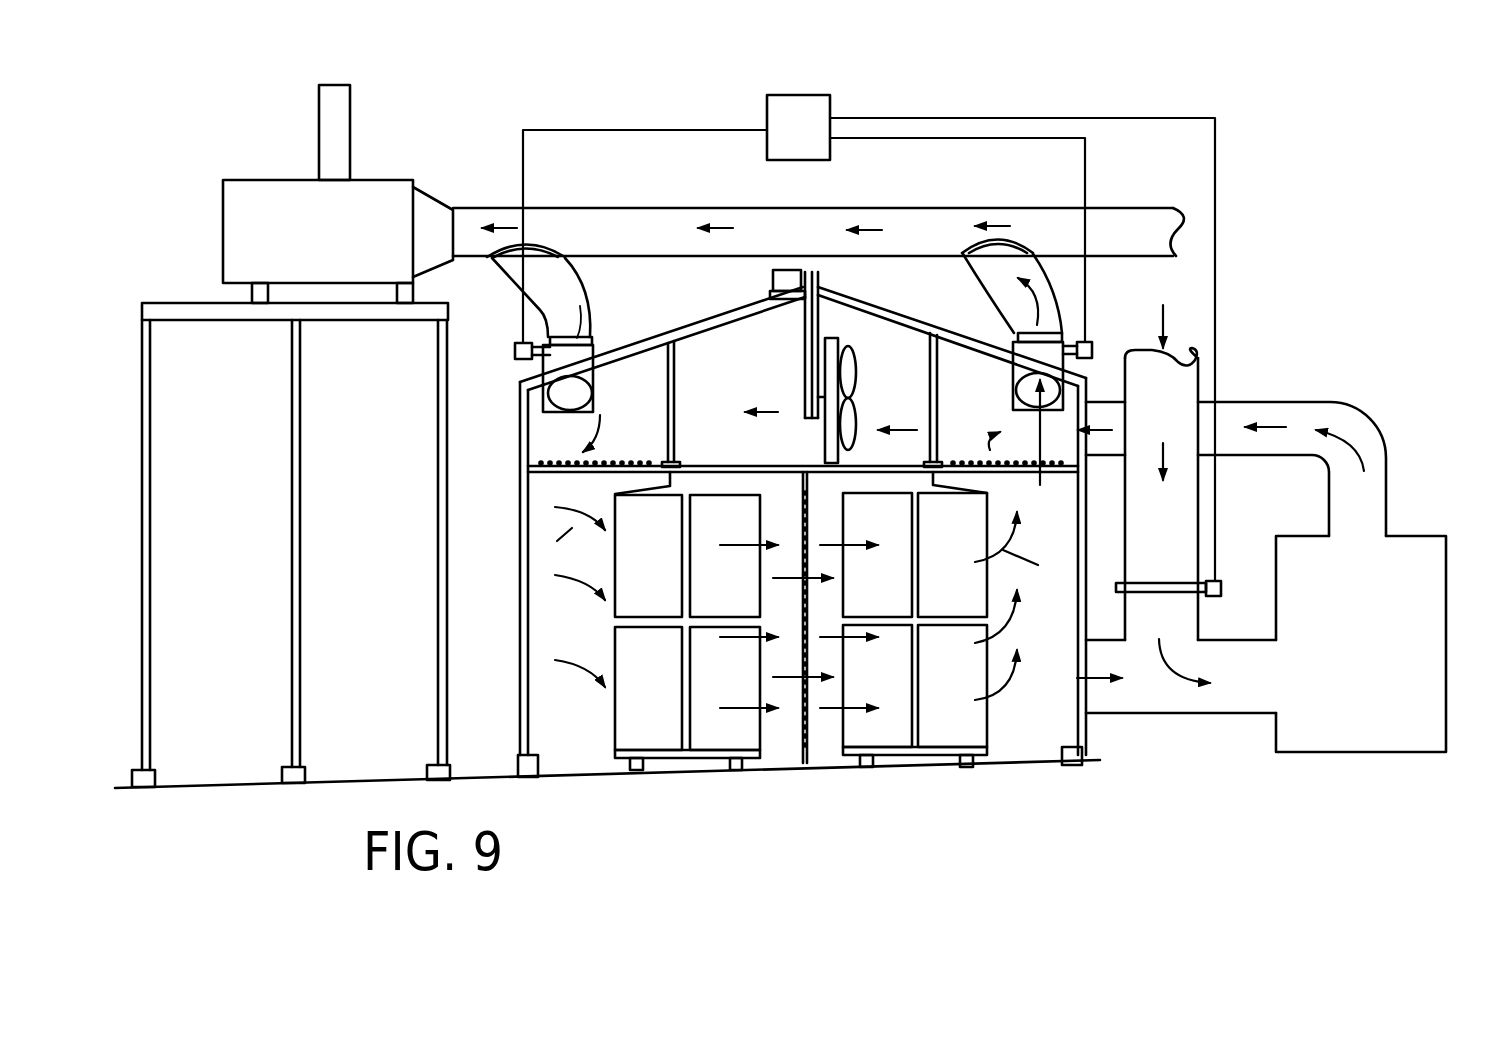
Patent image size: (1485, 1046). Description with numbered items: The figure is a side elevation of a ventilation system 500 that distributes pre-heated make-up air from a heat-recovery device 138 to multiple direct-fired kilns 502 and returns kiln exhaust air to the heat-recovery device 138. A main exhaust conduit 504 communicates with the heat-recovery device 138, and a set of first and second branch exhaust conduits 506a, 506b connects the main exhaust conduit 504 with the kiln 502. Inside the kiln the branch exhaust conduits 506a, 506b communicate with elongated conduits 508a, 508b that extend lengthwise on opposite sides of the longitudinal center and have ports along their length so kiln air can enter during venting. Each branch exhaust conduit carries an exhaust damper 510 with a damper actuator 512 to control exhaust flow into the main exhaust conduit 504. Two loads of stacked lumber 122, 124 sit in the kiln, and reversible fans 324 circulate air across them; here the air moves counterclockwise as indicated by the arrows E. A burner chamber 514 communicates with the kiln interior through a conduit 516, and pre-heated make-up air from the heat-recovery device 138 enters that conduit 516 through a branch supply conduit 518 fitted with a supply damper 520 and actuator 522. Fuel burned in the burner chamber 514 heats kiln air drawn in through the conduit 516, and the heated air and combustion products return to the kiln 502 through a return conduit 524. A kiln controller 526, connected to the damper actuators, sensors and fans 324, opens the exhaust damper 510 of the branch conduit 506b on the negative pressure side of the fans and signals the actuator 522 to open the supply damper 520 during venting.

The ventilation system 500 is at (507, 112).
The heat-recovery device 138 is at (283, 163).
The direct-fired kiln 502 is at (973, 788).
The main exhaust conduit 504 is at (712, 206).
The first branch exhaust conduit 506a is at (558, 283).
The second branch exhaust conduit 506b is at (1037, 280).
The first elongated conduit 508a is at (676, 372).
The second elongated conduit 508b is at (1013, 395).
The exhaust damper 510 is at (588, 318).
The damper actuator 512 is at (515, 352).
The burner chamber 514 is at (1423, 536).
The conduit 516 is at (1174, 715).
The branch supply conduit 518 is at (1198, 382).
The supply damper 520 is at (1163, 587).
The actuator 522 is at (1221, 589).
The return conduit 524 is at (1364, 410).
The kiln controller 526 is at (825, 148).
The reversible fan 324 is at (847, 428).
The load of stacked lumber 122 is at (747, 685).
The load of stacked lumber 124 is at (974, 684).